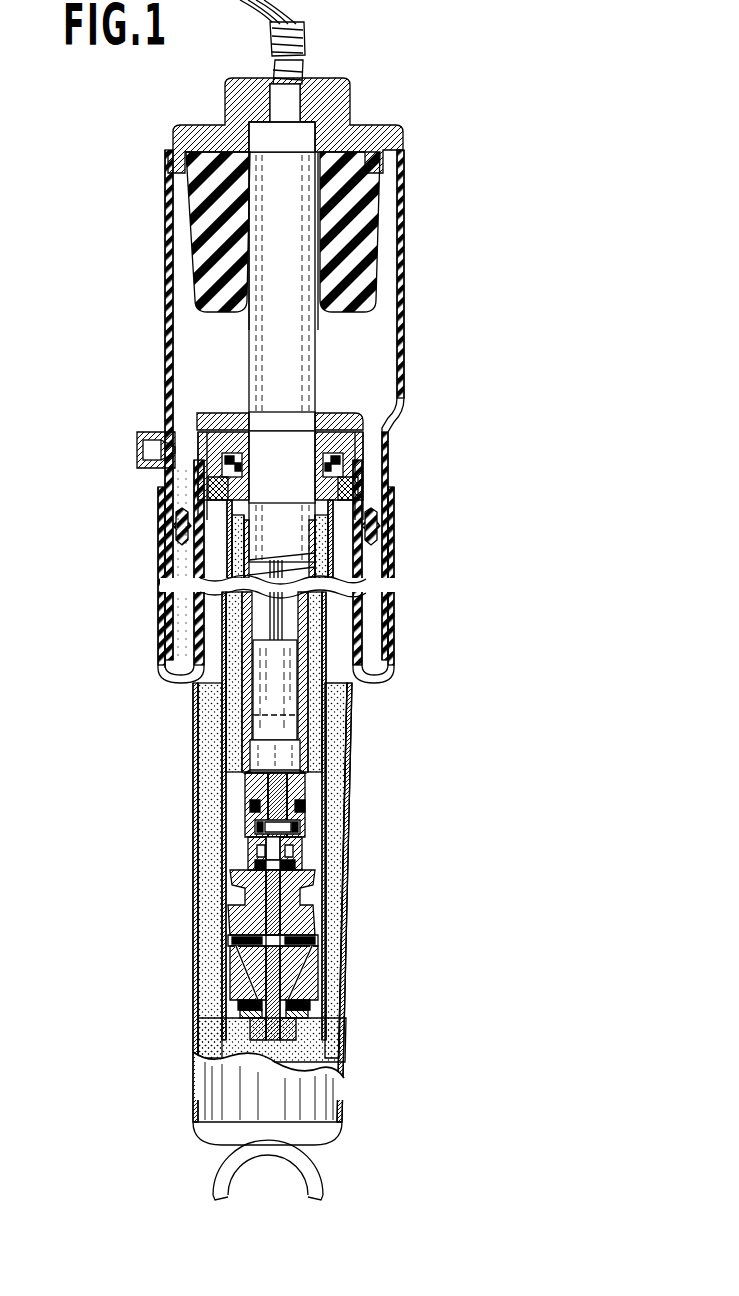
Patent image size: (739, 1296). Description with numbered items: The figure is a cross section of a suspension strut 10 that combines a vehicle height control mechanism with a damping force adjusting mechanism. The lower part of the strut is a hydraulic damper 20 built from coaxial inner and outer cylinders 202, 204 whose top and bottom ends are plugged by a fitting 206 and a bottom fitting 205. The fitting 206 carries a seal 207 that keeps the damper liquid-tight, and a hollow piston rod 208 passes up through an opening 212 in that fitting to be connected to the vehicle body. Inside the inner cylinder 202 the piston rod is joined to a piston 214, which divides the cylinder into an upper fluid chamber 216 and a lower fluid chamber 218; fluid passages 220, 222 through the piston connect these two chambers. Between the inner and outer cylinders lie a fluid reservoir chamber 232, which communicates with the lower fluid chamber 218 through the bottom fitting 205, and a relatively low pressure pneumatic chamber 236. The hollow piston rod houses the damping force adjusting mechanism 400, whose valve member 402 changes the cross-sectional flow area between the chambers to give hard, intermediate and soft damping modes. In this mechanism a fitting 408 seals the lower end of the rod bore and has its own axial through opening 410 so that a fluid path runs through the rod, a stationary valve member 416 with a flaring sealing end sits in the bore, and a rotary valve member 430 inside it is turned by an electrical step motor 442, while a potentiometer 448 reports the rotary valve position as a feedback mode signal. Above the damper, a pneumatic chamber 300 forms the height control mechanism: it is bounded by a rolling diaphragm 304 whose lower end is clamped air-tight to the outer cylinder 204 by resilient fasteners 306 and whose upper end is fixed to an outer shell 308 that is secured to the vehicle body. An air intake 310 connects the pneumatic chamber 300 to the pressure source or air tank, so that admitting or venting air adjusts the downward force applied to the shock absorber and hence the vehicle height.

The suspension strut 10 is at (118, 577).
The hydraulic damper 20 is at (368, 732).
The inner cylinder 202 is at (351, 777).
The outer cylinder 204 is at (326, 820).
The bottom fitting 205 is at (214, 1130).
The fitting 206 is at (348, 410).
The seal 207 is at (345, 450).
The piston rod 208 is at (252, 378).
The opening 212 is at (320, 494).
The piston 214 is at (331, 945).
The upper fluid chamber 216 is at (328, 846).
The lower fluid chamber 218 is at (310, 1038).
The fluid passage 220 is at (334, 973).
The fluid passage 222 is at (232, 970).
The fluid reservoir chamber 232 is at (200, 1024).
The low pressure pneumatic chamber 236 is at (136, 565).
The pneumatic chamber 300 is at (380, 339).
The rolling diaphragm 304 is at (395, 652).
The resilient fasteners 306 is at (378, 528).
The outer shell 308 is at (404, 249).
The air intake 310 is at (148, 432).
The damping force adjusting mechanism 400 is at (240, 816).
The valve member 402 is at (240, 848).
The fitting 408 is at (262, 938).
The through opening 410 is at (247, 1030).
The stationary valve member 416 is at (250, 860).
The rotary valve member 430 is at (248, 870).
The electrical step motor 442 is at (265, 695).
The potentiometer 448 is at (258, 750).